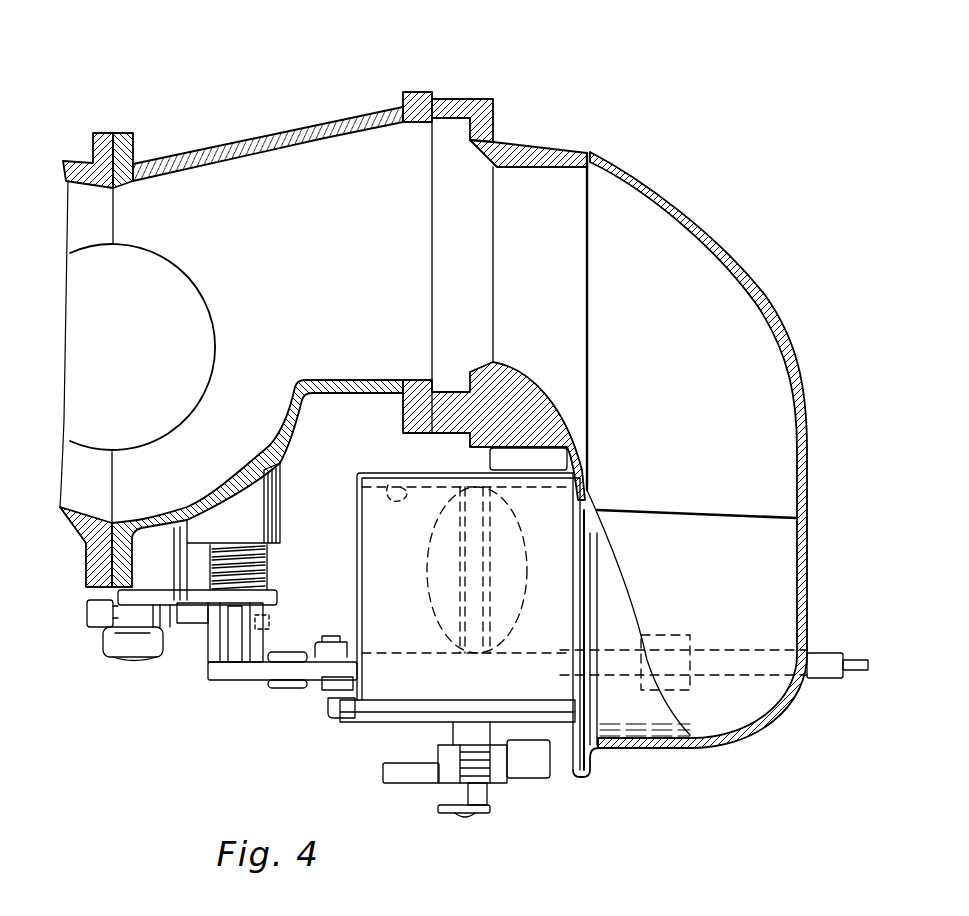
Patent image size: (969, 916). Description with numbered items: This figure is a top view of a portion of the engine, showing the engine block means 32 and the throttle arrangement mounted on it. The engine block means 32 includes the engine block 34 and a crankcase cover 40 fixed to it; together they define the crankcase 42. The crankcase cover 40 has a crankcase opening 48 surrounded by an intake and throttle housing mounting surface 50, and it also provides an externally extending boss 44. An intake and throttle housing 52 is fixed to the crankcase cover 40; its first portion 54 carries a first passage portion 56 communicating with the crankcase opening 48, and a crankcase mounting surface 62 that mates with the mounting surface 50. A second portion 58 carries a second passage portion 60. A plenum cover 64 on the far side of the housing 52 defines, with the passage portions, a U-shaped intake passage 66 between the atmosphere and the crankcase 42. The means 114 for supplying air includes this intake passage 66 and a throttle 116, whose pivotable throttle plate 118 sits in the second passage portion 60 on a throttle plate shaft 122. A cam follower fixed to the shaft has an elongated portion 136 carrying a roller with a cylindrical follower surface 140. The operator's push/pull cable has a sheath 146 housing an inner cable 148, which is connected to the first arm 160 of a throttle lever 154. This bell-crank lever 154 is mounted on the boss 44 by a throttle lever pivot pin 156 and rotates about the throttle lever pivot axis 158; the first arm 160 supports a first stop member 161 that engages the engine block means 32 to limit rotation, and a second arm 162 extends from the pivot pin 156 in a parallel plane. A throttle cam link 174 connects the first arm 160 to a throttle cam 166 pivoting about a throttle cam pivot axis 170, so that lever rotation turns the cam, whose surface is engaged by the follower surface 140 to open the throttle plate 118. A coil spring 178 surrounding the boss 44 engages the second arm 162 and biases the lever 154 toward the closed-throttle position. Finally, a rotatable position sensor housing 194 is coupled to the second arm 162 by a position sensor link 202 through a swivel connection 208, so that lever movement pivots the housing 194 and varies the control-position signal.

The engine block means 32 is at (308, 70).
The engine block 34 is at (115, 132).
The crankcase cover 40 is at (233, 137).
The crankcase 42 is at (223, 224).
The boss 44 is at (268, 496).
The crankcase opening 48 is at (392, 118).
The intake and throttle housing mounting surface 50 is at (434, 99).
The intake and throttle housing 52 is at (502, 147).
The first portion 54 is at (574, 150).
The first passage portion 56 is at (453, 125).
The second portion 58 is at (582, 777).
The second passage portion 60 is at (400, 485).
The crankcase mounting surface 62 is at (418, 433).
The plenum cover 64 is at (633, 172).
The intake passage 66 is at (667, 401).
The means for supplying air to the combustion chamber 114 is at (691, 73).
The throttle 116 is at (428, 814).
The throttle plate 118 is at (503, 535).
The throttle plate shaft 122 is at (262, 578).
The elongated portion 136 is at (484, 813).
The follower surface 140 is at (443, 787).
The sheath 146 is at (828, 653).
The inner cable 148 is at (557, 644).
The throttle lever 154 is at (260, 668).
The throttle lever pivot pin 156 is at (268, 623).
The throttle lever pivot axis 158 is at (237, 650).
The first arm 160 is at (390, 651).
The first stop member 161 is at (281, 684).
The second arm 162 is at (225, 618).
The throttle cam 166 is at (381, 776).
The throttle cam pivot axis 170 is at (540, 738).
The throttle cam link 174 is at (342, 720).
The coil spring 178 is at (268, 547).
The position sensor housing 194 is at (157, 658).
The position sensor link 202 is at (104, 646).
The swivel connection 208 is at (87, 604).